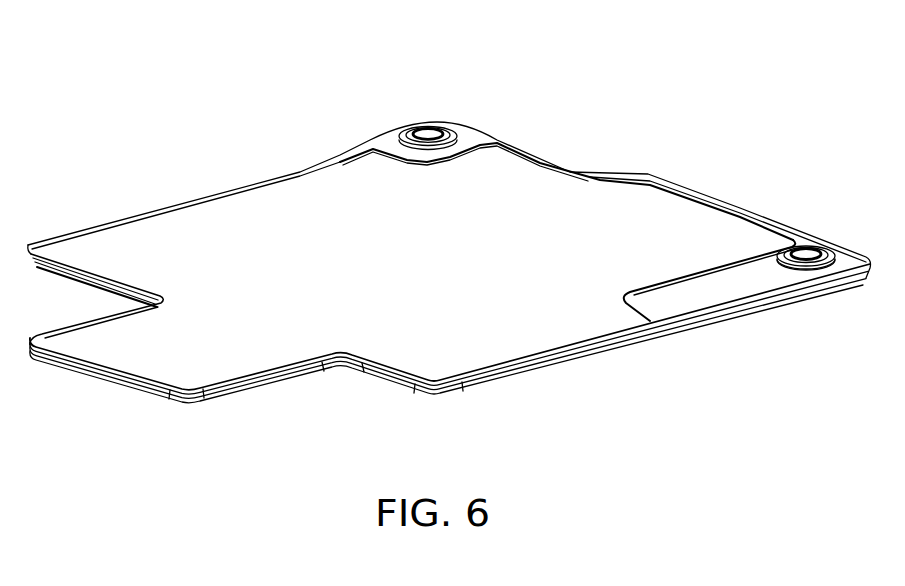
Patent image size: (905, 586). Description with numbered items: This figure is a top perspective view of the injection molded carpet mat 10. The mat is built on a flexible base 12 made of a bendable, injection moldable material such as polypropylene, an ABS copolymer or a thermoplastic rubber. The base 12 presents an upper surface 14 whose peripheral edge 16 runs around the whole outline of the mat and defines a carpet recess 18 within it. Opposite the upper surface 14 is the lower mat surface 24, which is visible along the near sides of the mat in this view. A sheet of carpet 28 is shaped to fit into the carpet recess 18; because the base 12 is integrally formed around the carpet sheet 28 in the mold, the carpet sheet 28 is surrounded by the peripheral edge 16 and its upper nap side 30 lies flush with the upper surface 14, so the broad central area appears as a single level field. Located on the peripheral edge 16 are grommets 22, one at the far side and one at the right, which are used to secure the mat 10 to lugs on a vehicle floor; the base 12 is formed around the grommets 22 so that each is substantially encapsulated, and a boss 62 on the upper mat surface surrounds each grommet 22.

The carpet mat 10 is at (707, 108).
The flexible base 12 is at (723, 318).
The upper surface 14 is at (783, 222).
The peripheral edge 16 is at (700, 223).
The carpet recess 18 is at (500, 160).
The grommet 22 is at (429, 127).
The lower mat surface 24 is at (552, 366).
The carpet sheet 28 is at (117, 233).
The nap side 30 is at (387, 335).
The boss 62 is at (806, 268).